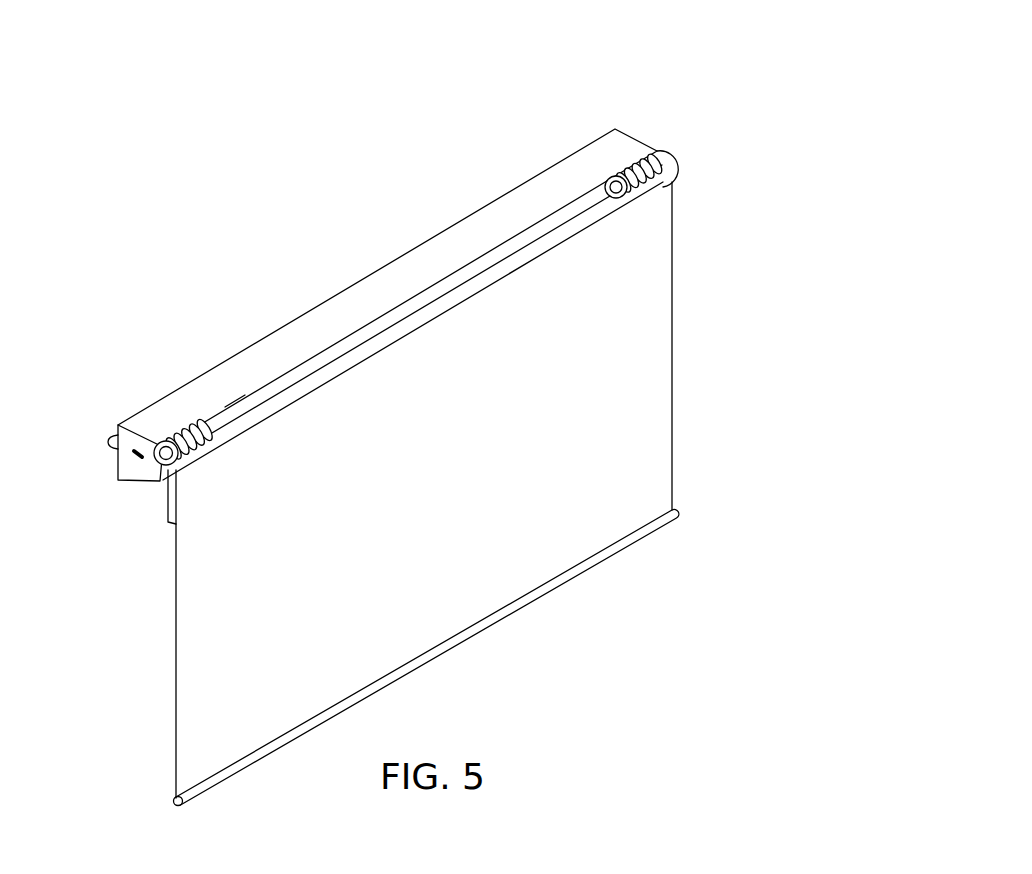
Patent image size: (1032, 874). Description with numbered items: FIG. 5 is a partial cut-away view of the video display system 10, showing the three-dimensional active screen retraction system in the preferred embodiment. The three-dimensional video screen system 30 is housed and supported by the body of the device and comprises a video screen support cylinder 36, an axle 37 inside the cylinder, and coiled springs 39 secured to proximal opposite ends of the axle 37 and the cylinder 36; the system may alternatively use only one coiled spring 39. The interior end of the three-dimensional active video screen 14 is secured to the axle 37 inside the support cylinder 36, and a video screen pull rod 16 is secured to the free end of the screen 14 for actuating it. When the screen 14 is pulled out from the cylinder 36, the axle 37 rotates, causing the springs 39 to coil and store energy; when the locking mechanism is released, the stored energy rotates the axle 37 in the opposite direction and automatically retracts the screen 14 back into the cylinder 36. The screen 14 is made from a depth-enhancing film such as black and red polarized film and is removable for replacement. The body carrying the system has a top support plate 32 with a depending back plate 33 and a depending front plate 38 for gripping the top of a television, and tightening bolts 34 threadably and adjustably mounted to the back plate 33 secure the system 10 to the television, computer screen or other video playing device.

The video display system 10 is at (283, 190).
The 3-D active video screen 14 is at (650, 307).
The video screen pull rod 16 is at (679, 513).
The 3-D video screen system 30 is at (622, 118).
The top support plate 32 is at (540, 195).
The back plate 33 is at (125, 487).
The tightening bolt 34 is at (113, 440).
The video screen support cylinder 36 is at (237, 398).
The axle 37 is at (310, 375).
The front plate 38 is at (167, 507).
The coiled spring 39 is at (655, 153).